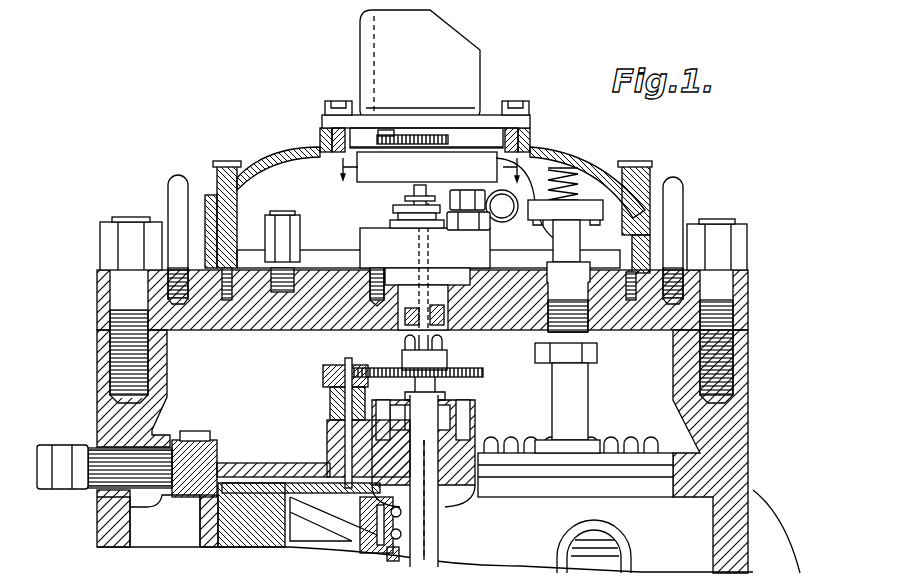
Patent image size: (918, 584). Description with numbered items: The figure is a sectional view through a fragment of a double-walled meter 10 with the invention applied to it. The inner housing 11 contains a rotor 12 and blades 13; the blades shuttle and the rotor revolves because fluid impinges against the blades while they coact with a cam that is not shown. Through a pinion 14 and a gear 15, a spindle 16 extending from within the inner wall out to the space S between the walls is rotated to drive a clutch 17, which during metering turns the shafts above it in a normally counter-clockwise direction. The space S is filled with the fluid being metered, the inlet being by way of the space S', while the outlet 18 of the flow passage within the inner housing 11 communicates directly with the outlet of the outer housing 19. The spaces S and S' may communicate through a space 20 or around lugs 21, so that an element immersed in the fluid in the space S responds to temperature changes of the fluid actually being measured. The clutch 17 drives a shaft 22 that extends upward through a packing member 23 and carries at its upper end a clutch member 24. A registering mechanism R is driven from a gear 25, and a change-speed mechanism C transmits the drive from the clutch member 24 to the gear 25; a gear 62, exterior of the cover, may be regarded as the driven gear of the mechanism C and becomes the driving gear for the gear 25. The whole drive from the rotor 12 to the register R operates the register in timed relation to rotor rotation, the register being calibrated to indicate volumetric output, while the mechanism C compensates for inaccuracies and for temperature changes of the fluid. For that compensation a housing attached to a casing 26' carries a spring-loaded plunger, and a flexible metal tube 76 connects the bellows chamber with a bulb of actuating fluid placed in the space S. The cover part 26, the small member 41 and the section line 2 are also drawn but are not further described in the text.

The double-walled meter 10 is at (93, 360).
The inner housing 11 is at (198, 521).
The rotor 12 is at (318, 530).
The blades 13 is at (233, 532).
The pinion 14 is at (466, 494).
The gear 15 is at (312, 490).
The spindle 16 is at (347, 441).
The clutch 17 is at (452, 362).
The outlet 18 is at (578, 542).
The outer housing 19 is at (737, 440).
The space 20 is at (160, 502).
The lugs 21 is at (157, 447).
The shaft 22 is at (432, 321).
The packing member 23 is at (425, 267).
The clutch member 24 is at (405, 207).
The gear 25 is at (380, 137).
The cover 26 is at (283, 214).
The casing 26' is at (585, 210).
The pin 41 is at (406, 190).
The gear 62 is at (450, 134).
The flexible metal tube 76 is at (545, 233).
The section line 2 is at (420, 170).
The registering mechanism R is at (468, 37).
The change-speed mechanism C is at (427, 167).